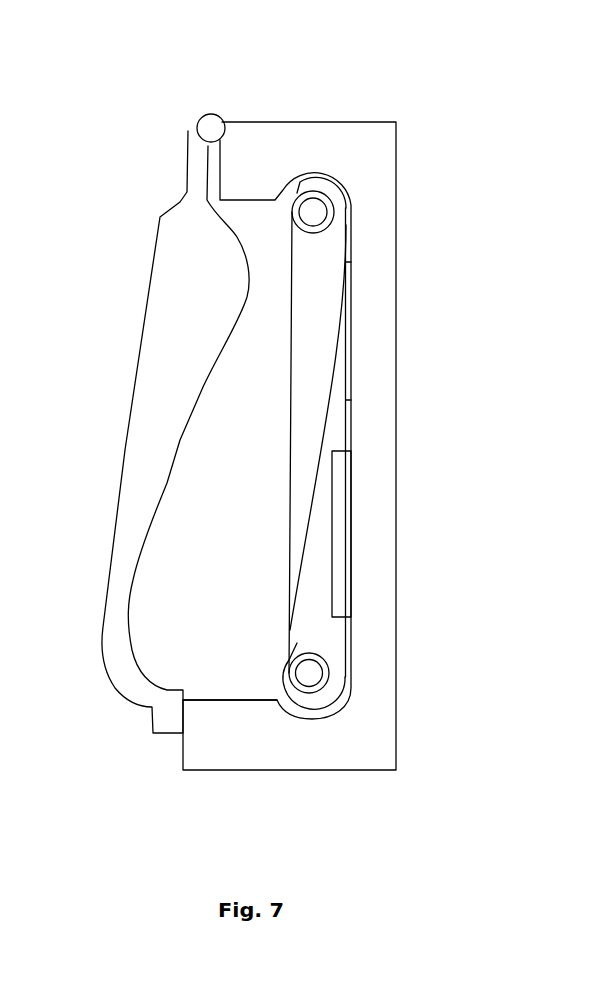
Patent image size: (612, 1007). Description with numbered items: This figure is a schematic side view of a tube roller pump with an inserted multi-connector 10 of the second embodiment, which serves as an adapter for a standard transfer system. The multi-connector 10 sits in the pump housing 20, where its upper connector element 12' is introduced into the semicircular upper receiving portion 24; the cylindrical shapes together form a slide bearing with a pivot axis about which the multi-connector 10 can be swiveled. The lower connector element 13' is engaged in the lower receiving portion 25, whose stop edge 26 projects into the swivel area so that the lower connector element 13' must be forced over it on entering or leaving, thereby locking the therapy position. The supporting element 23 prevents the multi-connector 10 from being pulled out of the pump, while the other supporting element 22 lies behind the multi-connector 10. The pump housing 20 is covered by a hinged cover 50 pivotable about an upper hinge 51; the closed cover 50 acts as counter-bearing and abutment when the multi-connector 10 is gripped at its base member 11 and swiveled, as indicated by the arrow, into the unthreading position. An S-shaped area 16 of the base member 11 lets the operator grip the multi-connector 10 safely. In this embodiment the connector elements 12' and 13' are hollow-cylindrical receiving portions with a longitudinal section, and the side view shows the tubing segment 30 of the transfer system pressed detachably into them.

The multi-connector 10 is at (263, 456).
The base member 11 is at (287, 578).
The upper connector element 12' is at (315, 268).
The lower connector element 13' is at (364, 639).
The S-shaped area 16 is at (325, 423).
The pump housing 20 is at (298, 132).
The supporting element 22 is at (352, 357).
The supporting element 23 is at (345, 545).
The receiving portion 24 is at (330, 175).
The receiving portion 25 is at (342, 710).
The stop edge 26 is at (275, 703).
The tubing segment 30 is at (293, 215).
The cover 50 is at (162, 305).
The hinge 51 is at (205, 116).